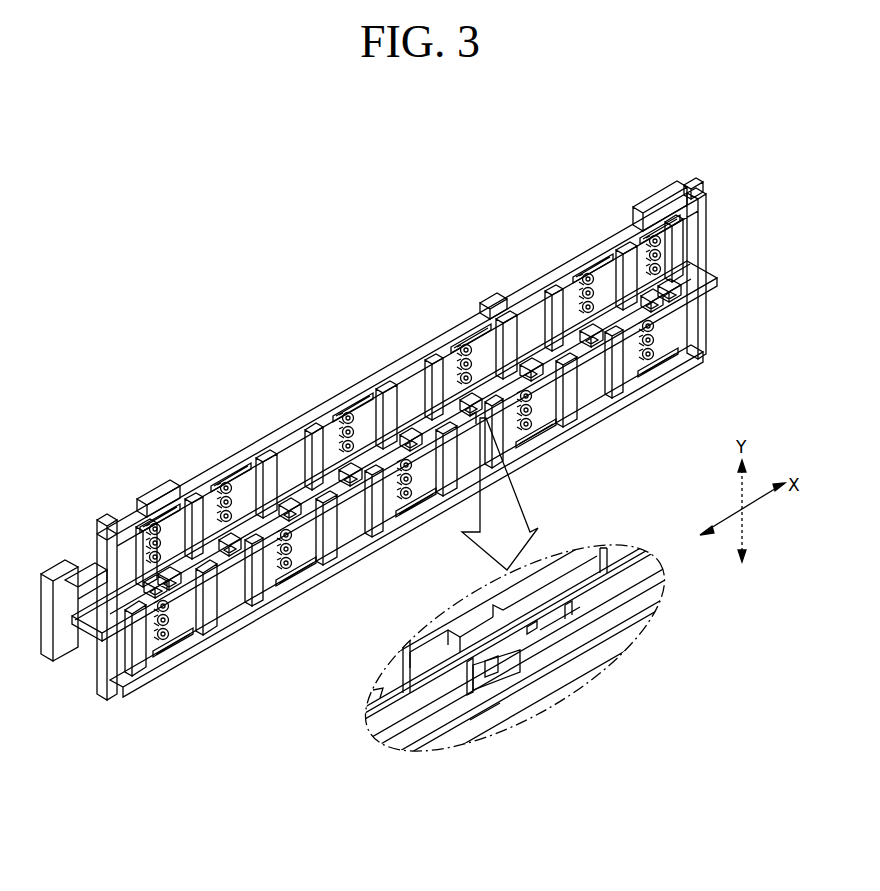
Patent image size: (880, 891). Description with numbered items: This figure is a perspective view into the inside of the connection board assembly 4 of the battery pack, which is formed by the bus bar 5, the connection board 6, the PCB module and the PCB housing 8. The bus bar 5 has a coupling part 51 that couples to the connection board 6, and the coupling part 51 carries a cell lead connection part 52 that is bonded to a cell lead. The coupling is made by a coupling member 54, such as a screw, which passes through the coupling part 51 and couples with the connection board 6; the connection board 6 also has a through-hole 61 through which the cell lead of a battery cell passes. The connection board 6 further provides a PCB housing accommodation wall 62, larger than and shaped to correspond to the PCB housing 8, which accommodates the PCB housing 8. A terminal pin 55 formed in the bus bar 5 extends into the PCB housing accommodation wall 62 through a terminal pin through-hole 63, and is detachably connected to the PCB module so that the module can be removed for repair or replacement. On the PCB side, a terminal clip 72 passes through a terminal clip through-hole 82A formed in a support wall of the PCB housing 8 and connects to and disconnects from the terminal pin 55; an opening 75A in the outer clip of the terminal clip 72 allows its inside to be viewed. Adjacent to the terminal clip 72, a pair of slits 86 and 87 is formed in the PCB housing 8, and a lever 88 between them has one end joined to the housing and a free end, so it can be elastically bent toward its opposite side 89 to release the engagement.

The connection board assembly 4 is at (688, 160).
The bus bar 5 is at (409, 420).
The coupling part 51 is at (602, 277).
The cell lead connection part 52 is at (570, 295).
The connection board 6 is at (530, 323).
The coupling member 54 is at (450, 395).
The through-hole 61 is at (398, 377).
The PCB housing 8 is at (563, 350).
The PCB housing accommodation wall 62 is at (408, 455).
The terminal pin through-hole 63 is at (488, 617).
The terminal pin 55 is at (475, 627).
The lever 88 is at (470, 635).
The terminal clip through-hole 82A is at (475, 417).
The opening 75A is at (490, 670).
The terminal clip 72 is at (487, 683).
The slit 86 is at (410, 720).
The opposite side of the lever 89 is at (477, 717).
The slit 87 is at (540, 630).